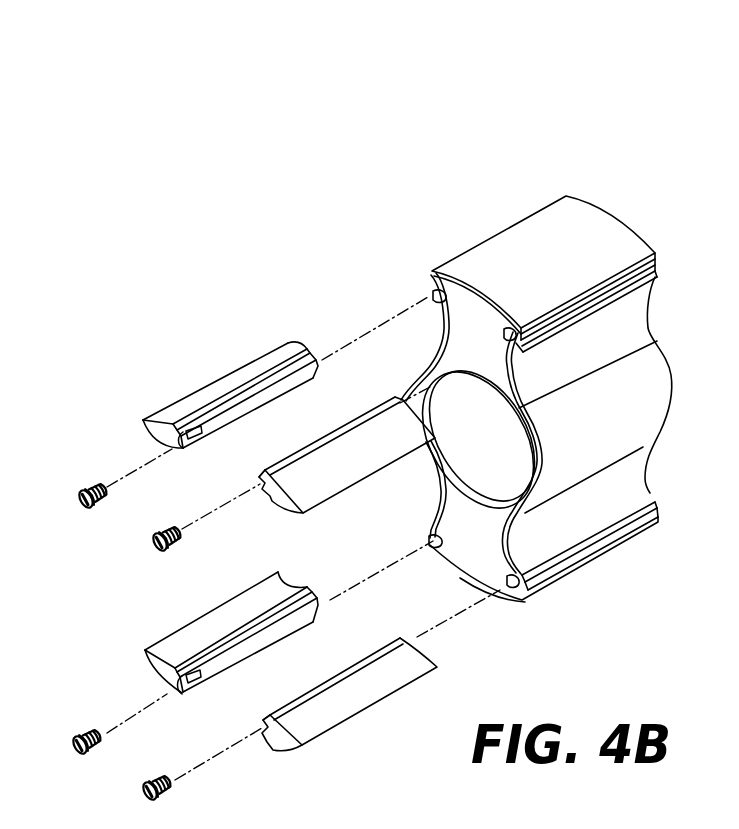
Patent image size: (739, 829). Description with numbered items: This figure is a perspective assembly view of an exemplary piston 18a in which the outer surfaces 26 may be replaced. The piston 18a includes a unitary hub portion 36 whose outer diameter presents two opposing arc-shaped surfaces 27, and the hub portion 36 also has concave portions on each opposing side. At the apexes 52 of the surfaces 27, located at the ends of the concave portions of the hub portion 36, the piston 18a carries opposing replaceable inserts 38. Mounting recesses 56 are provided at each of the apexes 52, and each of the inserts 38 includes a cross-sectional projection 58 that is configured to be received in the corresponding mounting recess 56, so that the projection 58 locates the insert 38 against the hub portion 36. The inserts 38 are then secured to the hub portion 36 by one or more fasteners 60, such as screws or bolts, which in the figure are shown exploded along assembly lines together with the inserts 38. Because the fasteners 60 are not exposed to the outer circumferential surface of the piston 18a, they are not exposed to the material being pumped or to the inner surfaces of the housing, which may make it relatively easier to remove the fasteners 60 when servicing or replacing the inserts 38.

The piston 18a is at (484, 134).
The surfaces 26 is at (14, 416).
The opposing surfaces 27 is at (597, 215).
The hub portion 36 is at (660, 350).
The replaceable inserts 38 is at (160, 420).
The apexes 52 is at (662, 254).
The mounting recesses 56 is at (653, 273).
The cross-sectional projection 58 is at (182, 450).
The fasteners 60 is at (80, 490).